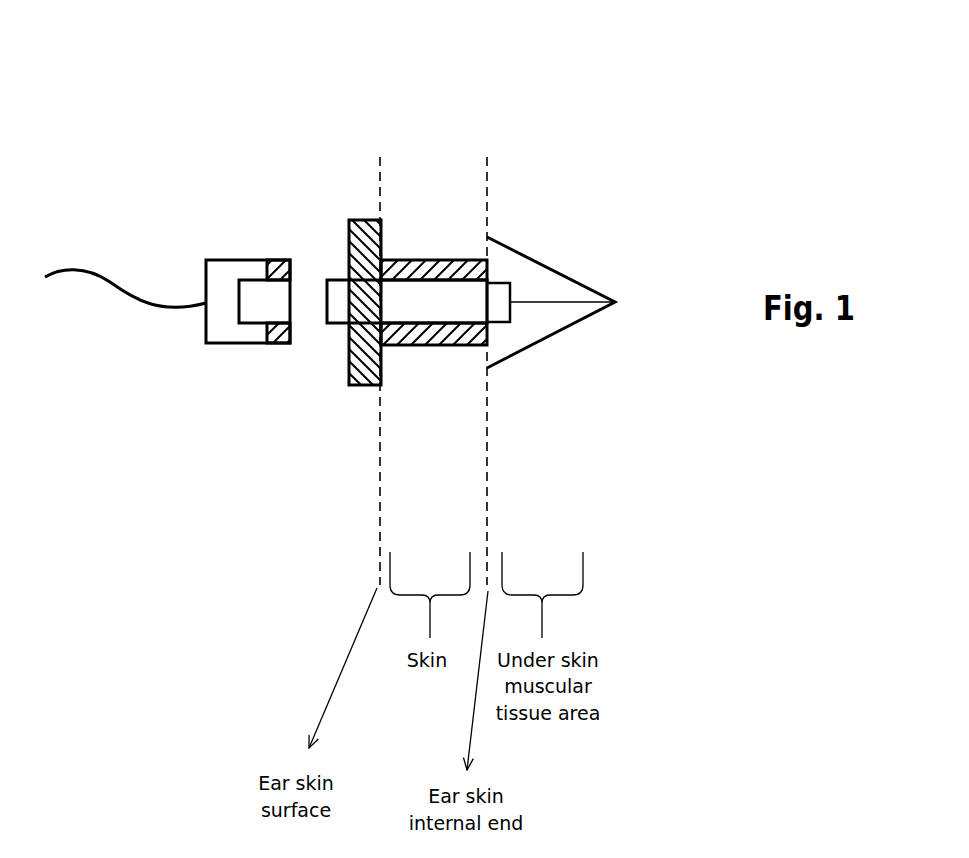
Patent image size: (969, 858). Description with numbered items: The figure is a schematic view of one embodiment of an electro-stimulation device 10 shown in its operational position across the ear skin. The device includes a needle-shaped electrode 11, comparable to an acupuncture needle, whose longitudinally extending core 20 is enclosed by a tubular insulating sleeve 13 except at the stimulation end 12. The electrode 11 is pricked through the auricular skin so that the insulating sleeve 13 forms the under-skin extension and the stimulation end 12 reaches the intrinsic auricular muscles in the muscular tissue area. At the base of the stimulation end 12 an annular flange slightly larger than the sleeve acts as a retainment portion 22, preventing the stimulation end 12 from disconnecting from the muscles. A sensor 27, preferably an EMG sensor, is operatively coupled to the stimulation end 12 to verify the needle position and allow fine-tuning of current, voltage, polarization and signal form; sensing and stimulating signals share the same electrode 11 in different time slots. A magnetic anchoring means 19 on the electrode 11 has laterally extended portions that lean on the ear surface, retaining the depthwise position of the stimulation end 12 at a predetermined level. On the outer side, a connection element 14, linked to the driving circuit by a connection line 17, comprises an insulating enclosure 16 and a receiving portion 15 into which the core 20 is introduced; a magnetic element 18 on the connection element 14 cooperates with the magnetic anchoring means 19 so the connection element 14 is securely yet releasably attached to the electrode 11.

The electro-stimulation device 10 is at (327, 96).
The electrode 11 is at (545, 215).
The stimulation end 12 is at (579, 334).
The insulating sleeve 13 is at (439, 335).
The connection element 14 is at (205, 218).
The receiving portion 15 is at (278, 309).
The enclosure 16 is at (223, 309).
The connection line 17 is at (122, 309).
The magnetic element 18 is at (288, 256).
The magnetic anchoring means 19 is at (365, 217).
The core 20 is at (392, 310).
The retainment portion 22 is at (480, 245).
The sensor 27 is at (502, 274).